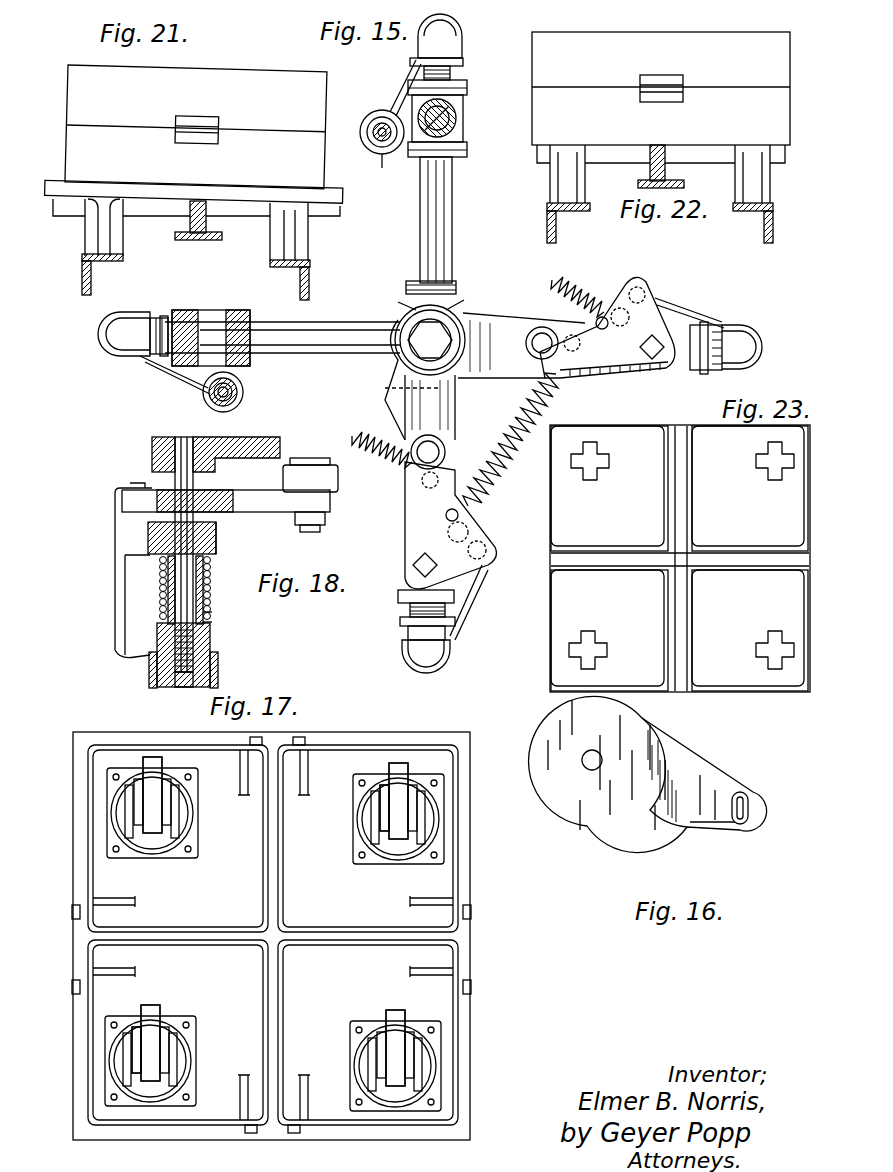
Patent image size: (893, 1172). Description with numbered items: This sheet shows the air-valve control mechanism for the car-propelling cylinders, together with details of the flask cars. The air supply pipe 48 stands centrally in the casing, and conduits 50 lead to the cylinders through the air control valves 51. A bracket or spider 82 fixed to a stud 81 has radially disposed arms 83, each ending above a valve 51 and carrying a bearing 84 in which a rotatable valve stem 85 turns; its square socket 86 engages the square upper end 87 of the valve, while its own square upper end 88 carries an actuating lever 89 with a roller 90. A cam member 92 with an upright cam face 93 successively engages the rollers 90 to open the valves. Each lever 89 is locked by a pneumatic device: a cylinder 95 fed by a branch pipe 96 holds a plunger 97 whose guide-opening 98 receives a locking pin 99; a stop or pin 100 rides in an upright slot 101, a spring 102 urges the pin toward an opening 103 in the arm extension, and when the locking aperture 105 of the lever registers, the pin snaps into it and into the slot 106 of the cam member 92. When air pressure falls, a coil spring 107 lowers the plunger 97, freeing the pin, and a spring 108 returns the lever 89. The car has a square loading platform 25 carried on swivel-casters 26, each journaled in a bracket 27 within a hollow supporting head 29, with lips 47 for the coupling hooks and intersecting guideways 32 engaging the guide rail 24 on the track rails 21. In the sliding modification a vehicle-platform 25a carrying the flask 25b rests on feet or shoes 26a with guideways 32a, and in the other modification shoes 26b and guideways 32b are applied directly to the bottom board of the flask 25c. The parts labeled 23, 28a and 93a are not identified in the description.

In FIG. 21, the track rails 21 is at (82, 270).
In FIG. 22, the track rails 21 is at (547, 229).
In FIG. 15, the screw 23 is at (539, 350).
In FIG. 21, the guide rail 24 is at (222, 236).
In FIG. 22, the guide rail 24 is at (684, 180).
In FIG. 17, the loading platform 25 is at (472, 886).
In FIG. 21, the vehicle-platform 25a is at (330, 236).
In FIG. 21, the flask 25b is at (196, 127).
In FIG. 22, the flask 25c is at (661, 88).
In FIG. 23, the flask 25c is at (680, 558).
In FIG. 17, the swivel-casters 26 is at (400, 775).
In FIG. 21, the feet or shoes 26a is at (100, 228).
In FIG. 22, the shoes or feet 26b is at (777, 188).
In FIG. 23, the shoes or feet 26b is at (592, 648).
In FIG. 17, the bracket 27 is at (418, 809).
In FIG. 21, the leg 28a is at (292, 244).
In FIG. 17, the hollow circular supporting head 29 is at (410, 862).
In FIG. 17, the intersecting guideways or grooves 32 is at (305, 942).
In FIG. 21, the intersecting guideways 32a is at (190, 218).
In FIG. 22, the intersecting guideways 32b is at (648, 166).
In FIG. 23, the intersecting guideways 32b is at (680, 528).
In FIG. 17, the lip 47 is at (262, 742).
In FIG. 15, the air supply pipe 48 is at (402, 318).
In FIG. 15, the conduits or pipe lines 50 is at (452, 200).
In FIG. 15, the air control valves 51 is at (464, 118).
In FIG. 15, the stud 81 is at (468, 305).
In FIG. 15, the bracket or spider 82 is at (510, 439).
In FIG. 15, the radially disposed arms 83 is at (428, 441).
In FIG. 18, the bearing 84 is at (216, 548).
In FIG. 15, the rotatable valve stem 85 is at (446, 140).
In FIG. 15, the square socket 86 is at (452, 106).
In FIG. 15, the square upper end 87 is at (448, 128).
In FIG. 15, the square upper end 88 is at (642, 374).
In FIG. 18, the actuating lever 89 is at (272, 512).
In FIG. 15, the actuating lever 89 is at (540, 432).
In FIG. 18, the roller 90 is at (330, 482).
In FIG. 15, the roller 90 is at (540, 330).
In FIG. 16, the cam member 92 is at (648, 774).
In FIG. 18, the cam member 92 is at (245, 438).
In FIG. 16, the upright cam face 93 is at (652, 838).
In FIG. 16, the cam tail 93a is at (696, 832).
In FIG. 18, the cylinder 95 is at (212, 664).
In FIG. 15, the cylinder 95 is at (244, 395).
In FIG. 15, the branch pipe 96 is at (410, 66).
In FIG. 18, the plunger 97 is at (150, 680).
In FIG. 15, the plunger 97 is at (385, 150).
In FIG. 18, the guide-opening 98 is at (180, 690).
In FIG. 18, the locking pin 99 is at (178, 480).
In FIG. 15, the locking pin 99 is at (384, 122).
In FIG. 18, the stop or pin 100 is at (205, 592).
In FIG. 15, the stop or pin 100 is at (396, 154).
In FIG. 18, the upright slot 101 is at (212, 623).
In FIG. 18, the spring 102 is at (160, 642).
In FIG. 15, the spring 102 is at (212, 406).
In FIG. 18, the opening 103 is at (148, 540).
In FIG. 18, the locking aperture 105 is at (157, 498).
In FIG. 15, the locking aperture 105 is at (645, 290).
In FIG. 16, the slot 106 is at (752, 812).
In FIG. 18, the slot 106 is at (152, 445).
In FIG. 18, the coil spring 107 is at (212, 612).
In FIG. 15, the coil spring 107 is at (368, 132).
In FIG. 15, the spring 108 is at (580, 282).